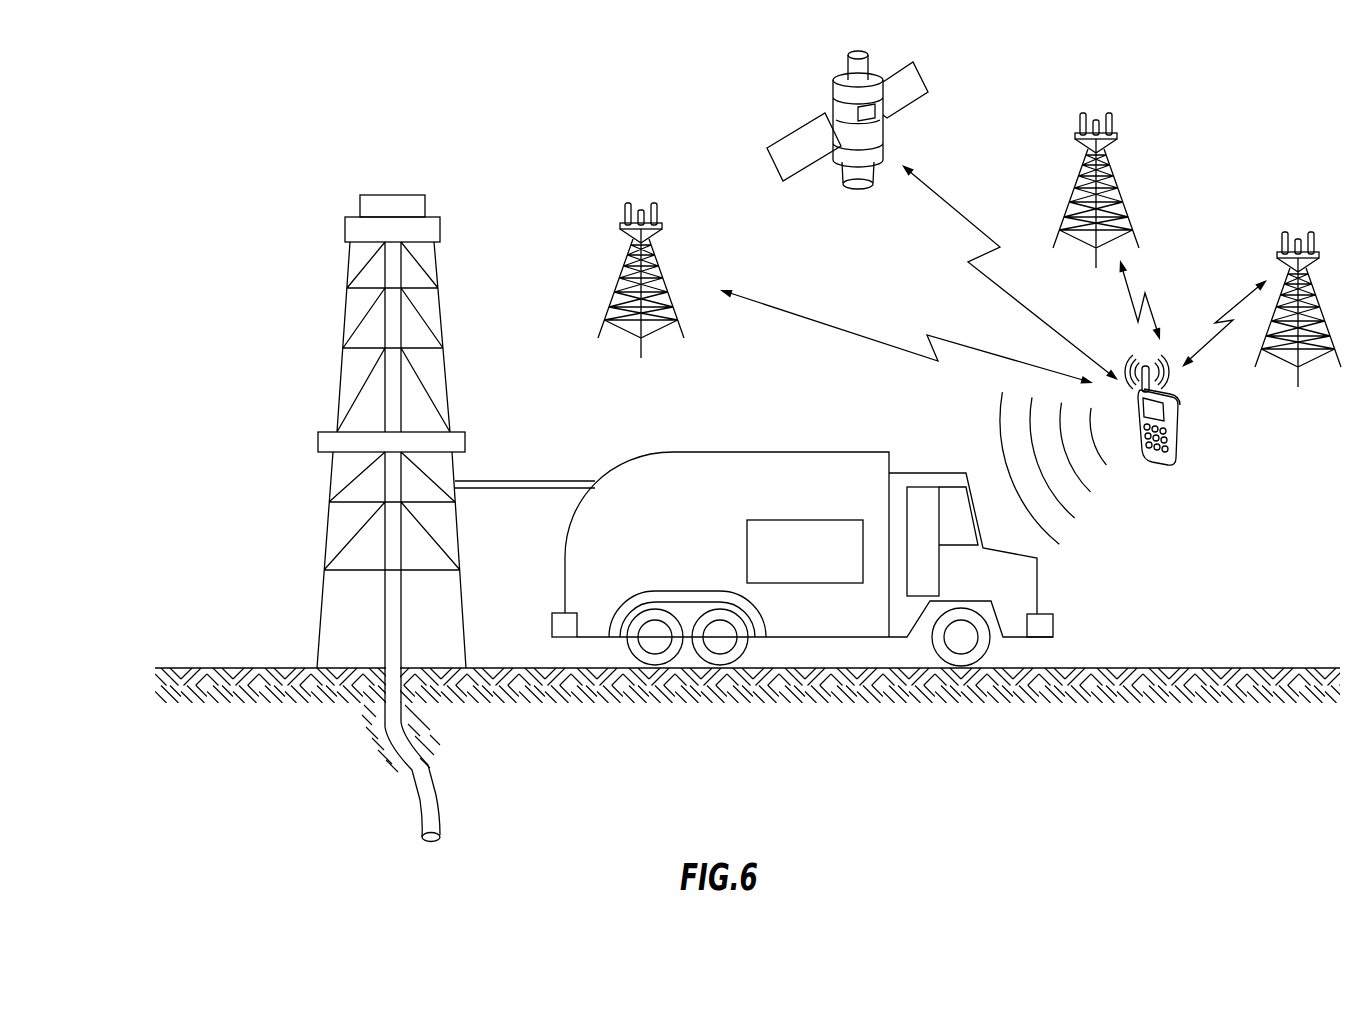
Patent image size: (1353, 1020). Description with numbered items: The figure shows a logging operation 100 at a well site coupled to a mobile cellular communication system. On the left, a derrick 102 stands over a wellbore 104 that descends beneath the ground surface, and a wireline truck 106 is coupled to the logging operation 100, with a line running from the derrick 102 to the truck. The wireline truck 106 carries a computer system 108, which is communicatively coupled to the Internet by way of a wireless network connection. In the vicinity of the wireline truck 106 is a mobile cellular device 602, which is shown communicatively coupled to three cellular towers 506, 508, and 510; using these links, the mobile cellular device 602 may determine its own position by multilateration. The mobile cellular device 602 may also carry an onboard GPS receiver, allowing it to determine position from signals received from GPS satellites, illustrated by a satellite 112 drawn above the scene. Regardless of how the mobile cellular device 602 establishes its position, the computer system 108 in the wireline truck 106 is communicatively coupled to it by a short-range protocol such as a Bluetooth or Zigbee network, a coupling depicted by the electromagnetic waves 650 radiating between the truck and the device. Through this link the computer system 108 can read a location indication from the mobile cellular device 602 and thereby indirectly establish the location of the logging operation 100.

The logging operation 100 is at (271, 156).
The derrick 102 is at (345, 228).
The wellbore 104 is at (431, 787).
The wireline truck 106 is at (637, 453).
The computer system 108 is at (806, 592).
The satellite 112 is at (836, 72).
The cellular tower 506 is at (625, 263).
The cellular tower 508 is at (1113, 167).
The cellular tower 510 is at (1320, 292).
The mobile cellular device 602 is at (1168, 467).
The electromagnetic waves 650 is at (968, 419).